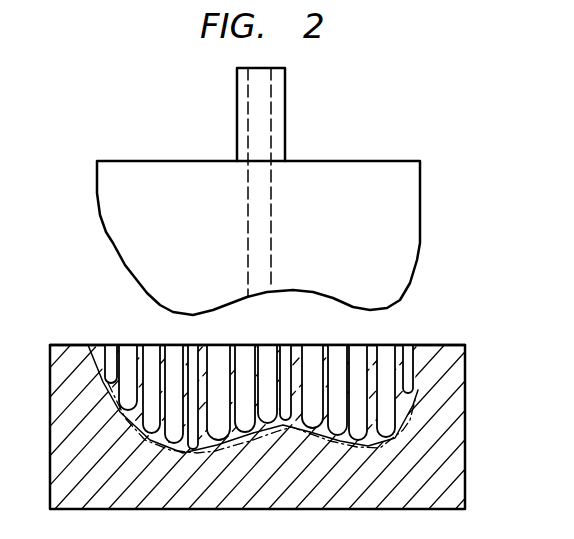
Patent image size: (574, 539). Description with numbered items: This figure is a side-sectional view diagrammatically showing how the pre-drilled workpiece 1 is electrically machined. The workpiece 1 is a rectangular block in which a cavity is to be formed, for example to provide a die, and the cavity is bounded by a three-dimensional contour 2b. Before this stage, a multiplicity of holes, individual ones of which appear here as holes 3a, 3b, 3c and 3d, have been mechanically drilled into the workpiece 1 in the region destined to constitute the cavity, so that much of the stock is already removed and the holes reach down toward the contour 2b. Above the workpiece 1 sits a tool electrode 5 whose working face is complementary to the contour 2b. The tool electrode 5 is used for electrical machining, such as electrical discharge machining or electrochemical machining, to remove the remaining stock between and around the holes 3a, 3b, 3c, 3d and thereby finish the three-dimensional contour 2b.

The workpiece 1 is at (465, 403).
The three-dimensional contour 2b is at (415, 400).
The slot 3a is at (310, 347).
The slot 3b is at (245, 347).
The slot 3c is at (197, 346).
The slot 3d is at (377, 347).
The tool electrode 5 is at (420, 223).